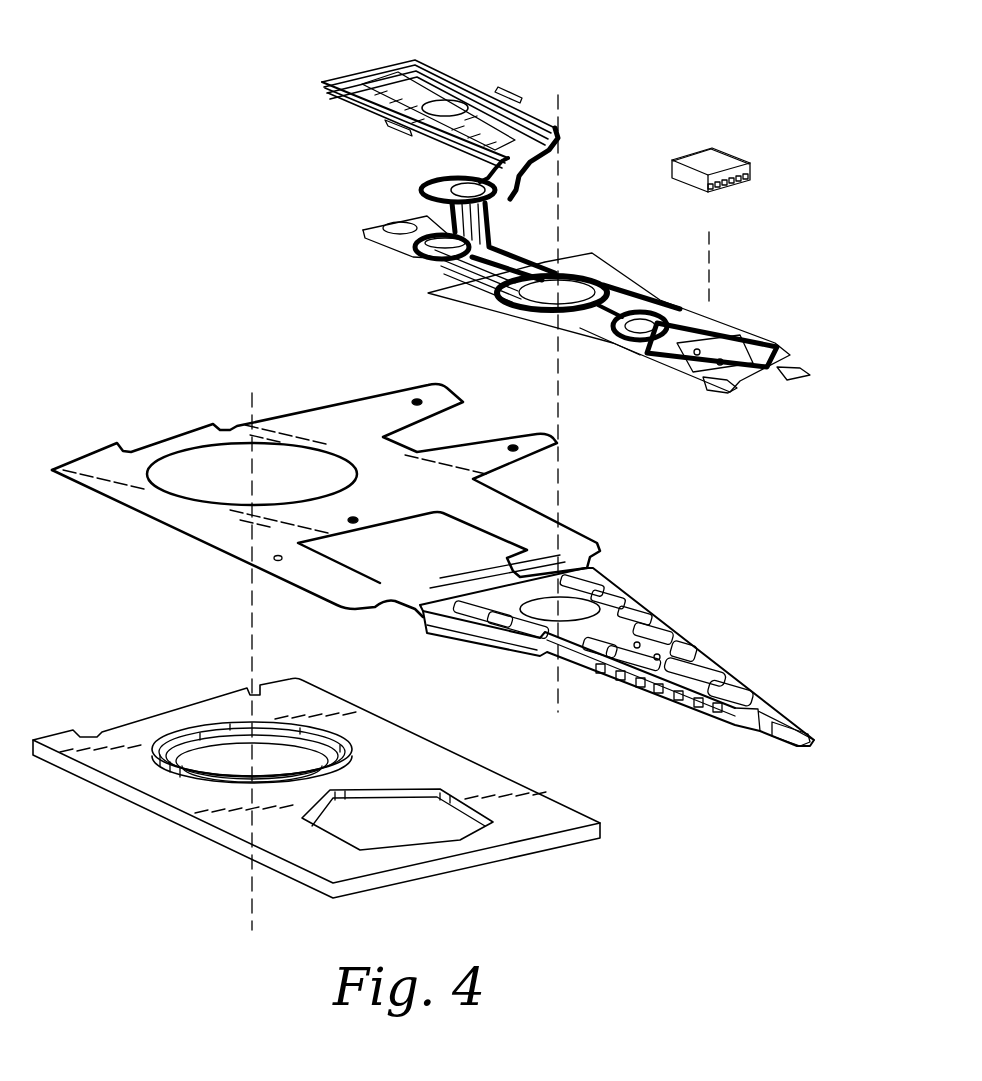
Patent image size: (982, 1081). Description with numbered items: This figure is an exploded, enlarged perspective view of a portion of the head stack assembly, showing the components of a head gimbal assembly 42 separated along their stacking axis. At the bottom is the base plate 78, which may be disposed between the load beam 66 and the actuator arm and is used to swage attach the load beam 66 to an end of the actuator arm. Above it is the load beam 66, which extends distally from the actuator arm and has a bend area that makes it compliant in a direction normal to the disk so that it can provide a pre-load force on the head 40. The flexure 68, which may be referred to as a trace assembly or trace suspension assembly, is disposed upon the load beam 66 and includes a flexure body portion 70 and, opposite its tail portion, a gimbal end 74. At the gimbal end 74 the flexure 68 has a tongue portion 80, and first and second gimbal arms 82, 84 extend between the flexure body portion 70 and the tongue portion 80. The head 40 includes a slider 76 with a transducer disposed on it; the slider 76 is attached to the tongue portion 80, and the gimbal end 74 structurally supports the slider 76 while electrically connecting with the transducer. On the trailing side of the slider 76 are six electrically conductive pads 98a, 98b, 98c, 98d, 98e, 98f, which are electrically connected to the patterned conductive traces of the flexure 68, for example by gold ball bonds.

The head gimbal assembly 42 is at (450, 60).
The flexure body portion 70 is at (384, 72).
The read head 40 is at (727, 158).
The slider 76 is at (738, 159).
The electrically conductive pad 98a is at (748, 178).
The electrically conductive pad 98b is at (741, 182).
The electrically conductive pad 98c is at (734, 184).
The electrically conductive pad 98d is at (727, 186).
The electrically conductive pad 98e is at (720, 188).
The electrically conductive pad 98f is at (712, 190).
The flexure 68 is at (603, 278).
The second gimbal arm 84 is at (612, 350).
The tongue portion 80 is at (660, 368).
The first gimbal arm 82 is at (728, 334).
The gimbal end 74 is at (712, 416).
The load beam 66 is at (590, 542).
The base plate 78 is at (495, 773).